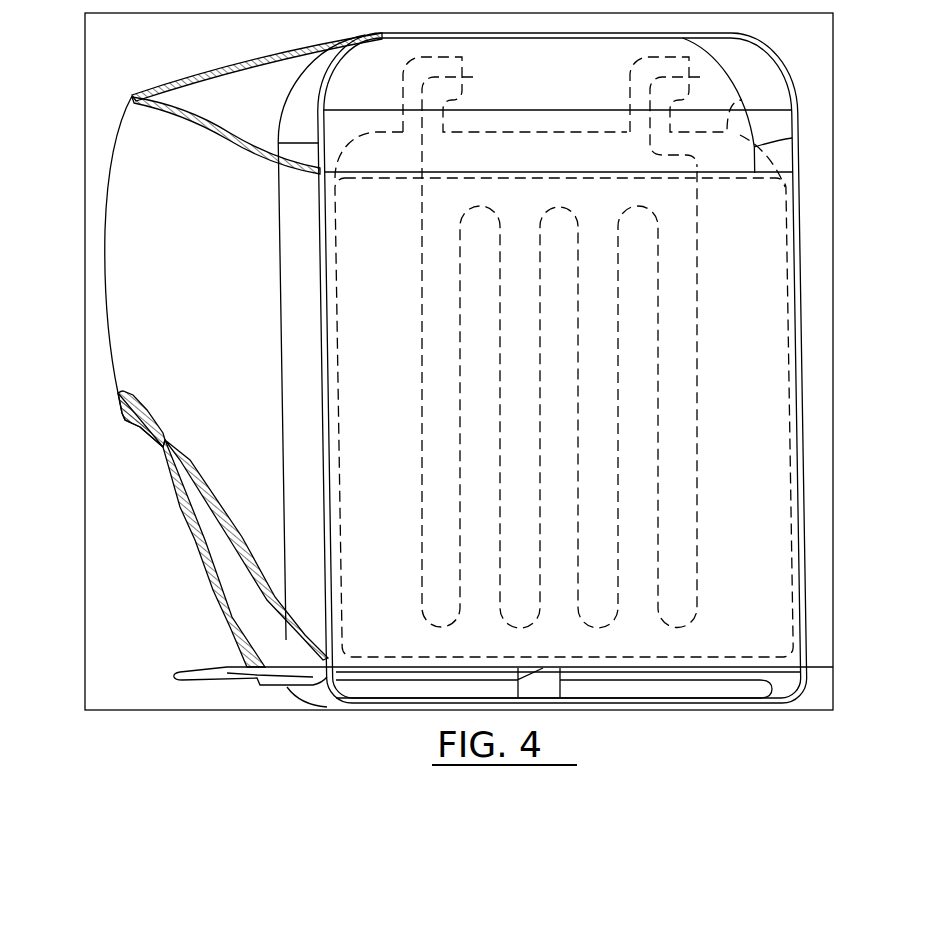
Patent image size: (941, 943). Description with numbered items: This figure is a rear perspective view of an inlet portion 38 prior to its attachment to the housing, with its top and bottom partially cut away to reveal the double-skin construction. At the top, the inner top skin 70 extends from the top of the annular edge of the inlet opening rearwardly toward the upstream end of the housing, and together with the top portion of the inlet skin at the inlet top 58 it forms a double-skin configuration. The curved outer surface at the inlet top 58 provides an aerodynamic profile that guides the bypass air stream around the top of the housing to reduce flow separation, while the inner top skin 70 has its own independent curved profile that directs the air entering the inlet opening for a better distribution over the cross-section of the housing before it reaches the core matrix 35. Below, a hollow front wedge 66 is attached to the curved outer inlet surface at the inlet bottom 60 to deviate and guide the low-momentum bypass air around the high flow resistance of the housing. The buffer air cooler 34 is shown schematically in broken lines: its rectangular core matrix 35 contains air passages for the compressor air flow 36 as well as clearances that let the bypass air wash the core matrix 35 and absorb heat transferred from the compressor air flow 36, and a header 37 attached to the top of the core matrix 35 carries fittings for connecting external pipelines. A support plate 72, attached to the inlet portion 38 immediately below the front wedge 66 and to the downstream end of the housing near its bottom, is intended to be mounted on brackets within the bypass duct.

The buffer air cooler 34 is at (790, 318).
The core matrix 35 is at (767, 498).
The compressor air flow 36 is at (697, 406).
The header 37 is at (742, 100).
The inlet portion 38 is at (128, 135).
The inlet top 58 is at (233, 77).
The inner top skin 70 is at (207, 127).
The front wedge 66 is at (197, 540).
The inlet bottom 60 is at (250, 582).
The support plate 72 is at (198, 678).